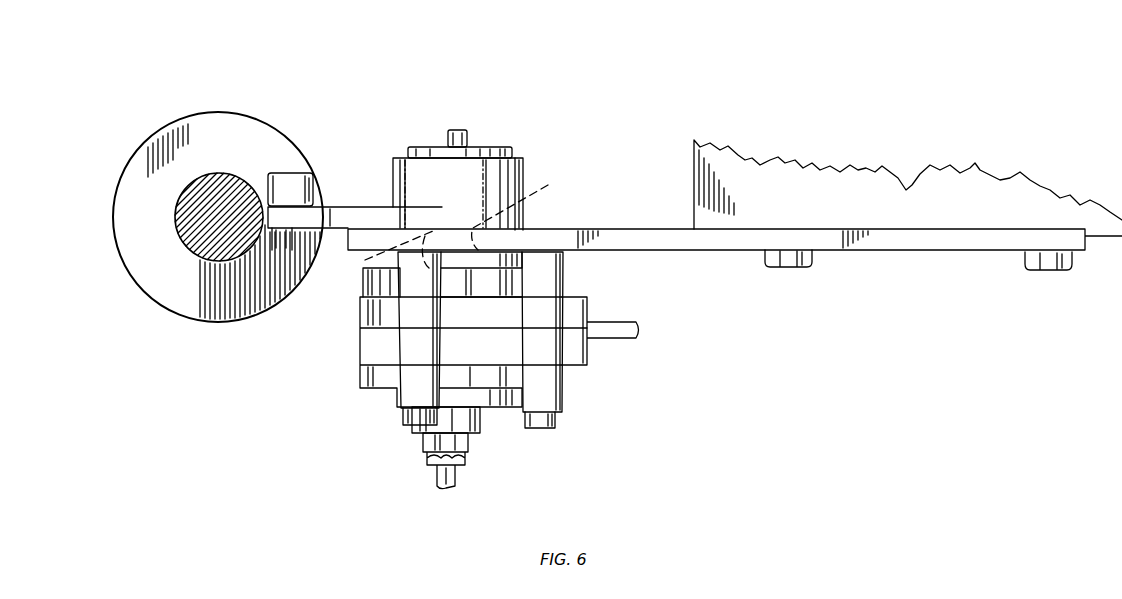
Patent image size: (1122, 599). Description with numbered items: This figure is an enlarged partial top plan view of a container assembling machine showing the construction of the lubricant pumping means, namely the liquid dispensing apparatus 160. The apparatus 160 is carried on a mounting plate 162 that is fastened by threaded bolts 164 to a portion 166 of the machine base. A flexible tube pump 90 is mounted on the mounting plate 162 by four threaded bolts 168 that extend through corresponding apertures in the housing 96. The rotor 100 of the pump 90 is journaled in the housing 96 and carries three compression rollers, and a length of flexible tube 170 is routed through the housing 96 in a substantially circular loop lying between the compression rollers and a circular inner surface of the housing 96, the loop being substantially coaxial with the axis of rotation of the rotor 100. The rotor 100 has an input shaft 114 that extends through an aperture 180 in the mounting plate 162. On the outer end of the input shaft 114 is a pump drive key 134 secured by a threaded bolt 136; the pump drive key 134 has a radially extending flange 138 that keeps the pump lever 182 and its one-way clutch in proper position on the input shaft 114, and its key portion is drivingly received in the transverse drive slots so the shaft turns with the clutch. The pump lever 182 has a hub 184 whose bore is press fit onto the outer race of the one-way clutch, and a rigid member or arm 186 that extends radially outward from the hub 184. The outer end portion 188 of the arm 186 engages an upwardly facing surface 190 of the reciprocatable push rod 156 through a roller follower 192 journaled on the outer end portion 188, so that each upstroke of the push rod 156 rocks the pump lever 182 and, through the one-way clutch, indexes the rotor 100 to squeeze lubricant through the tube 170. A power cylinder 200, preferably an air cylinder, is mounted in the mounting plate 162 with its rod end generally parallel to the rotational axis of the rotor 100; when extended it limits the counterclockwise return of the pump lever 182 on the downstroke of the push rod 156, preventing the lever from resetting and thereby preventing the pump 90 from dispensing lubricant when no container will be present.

The push rod 156 is at (198, 113).
The upwardly facing surface 190 is at (232, 119).
The roller follower 192 is at (290, 178).
The outer end portion 188 is at (292, 235).
The pump lever 182 is at (367, 205).
The rigid member or arm 186 is at (333, 206).
The pump drive key 134 is at (492, 147).
The hub 184 is at (518, 165).
The radially extending flange 138 is at (416, 148).
The threaded bolt 136 is at (466, 129).
The aperture 180 is at (529, 210).
The rotor 100 is at (381, 250).
The mounting plate 162 is at (897, 250).
The portion of the base 166 is at (786, 166).
The threaded bolts 164 is at (798, 268).
The flexible tube pump 90 is at (493, 398).
The input shaft 114 is at (440, 288).
The housing 96 is at (561, 390).
The threaded bolts 168 is at (405, 425).
The flexible tube 170 is at (626, 326).
The power cylinder 200 is at (480, 430).
The liquid dispensing apparatus 160 is at (334, 436).